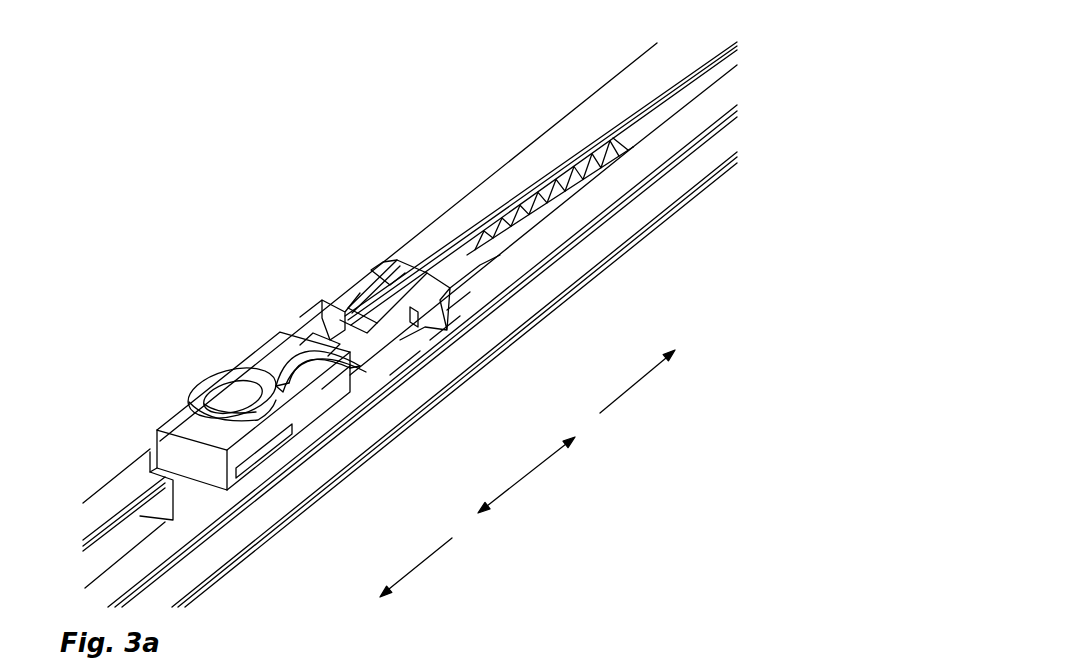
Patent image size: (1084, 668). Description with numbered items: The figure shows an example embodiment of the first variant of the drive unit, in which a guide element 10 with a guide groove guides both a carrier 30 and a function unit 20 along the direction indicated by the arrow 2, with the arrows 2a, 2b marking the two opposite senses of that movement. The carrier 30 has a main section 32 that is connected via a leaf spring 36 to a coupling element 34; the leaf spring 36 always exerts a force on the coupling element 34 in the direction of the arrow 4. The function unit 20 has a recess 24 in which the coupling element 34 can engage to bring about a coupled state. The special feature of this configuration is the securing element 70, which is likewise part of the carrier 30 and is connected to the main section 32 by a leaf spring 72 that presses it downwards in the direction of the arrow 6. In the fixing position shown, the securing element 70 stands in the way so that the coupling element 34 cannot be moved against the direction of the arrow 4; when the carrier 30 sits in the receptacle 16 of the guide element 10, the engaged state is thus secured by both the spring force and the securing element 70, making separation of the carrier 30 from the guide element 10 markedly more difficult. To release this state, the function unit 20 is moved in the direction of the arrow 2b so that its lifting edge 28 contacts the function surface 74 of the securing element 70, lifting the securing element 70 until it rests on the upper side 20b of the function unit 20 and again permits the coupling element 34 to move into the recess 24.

The arrow 2 is at (518, 485).
The arrow 2a is at (622, 395).
The arrow 2b is at (432, 555).
The arrow 4 is at (334, 321).
The arrow 6 is at (389, 282).
The guide element 10 is at (518, 337).
The receptacle 16 is at (310, 337).
The function unit 20 is at (466, 170).
The upper side 20b is at (548, 200).
The recess 24 is at (466, 262).
The lifting edge 28 is at (431, 272).
The carrier 30 is at (190, 366).
The main section 32 is at (188, 436).
The coupling element 34 is at (353, 323).
The leaf spring 36 is at (290, 362).
The securing element 70 is at (402, 365).
The leaf spring 72 is at (333, 380).
The function surface 74 is at (442, 330).